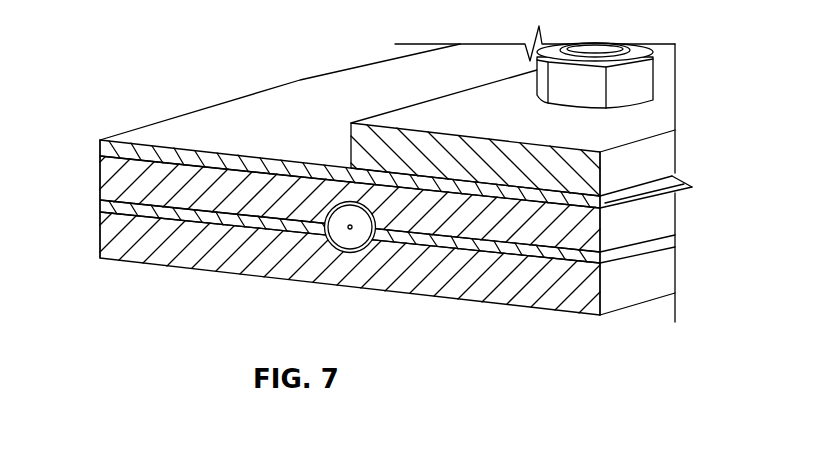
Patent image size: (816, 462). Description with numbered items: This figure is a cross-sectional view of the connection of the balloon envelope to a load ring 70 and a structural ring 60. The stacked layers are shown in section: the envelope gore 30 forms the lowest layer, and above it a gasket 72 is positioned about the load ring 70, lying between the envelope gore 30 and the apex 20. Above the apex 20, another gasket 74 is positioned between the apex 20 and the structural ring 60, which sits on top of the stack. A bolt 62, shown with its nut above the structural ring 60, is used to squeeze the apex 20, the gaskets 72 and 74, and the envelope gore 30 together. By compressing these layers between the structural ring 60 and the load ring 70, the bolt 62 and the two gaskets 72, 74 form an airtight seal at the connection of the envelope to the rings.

The gasket 74 is at (112, 148).
The apex 20 is at (105, 183).
The gasket 72 is at (105, 207).
The envelope gore 30 is at (105, 247).
The structural ring 60 is at (353, 143).
The bolt 62 is at (645, 83).
The load ring 70 is at (347, 240).